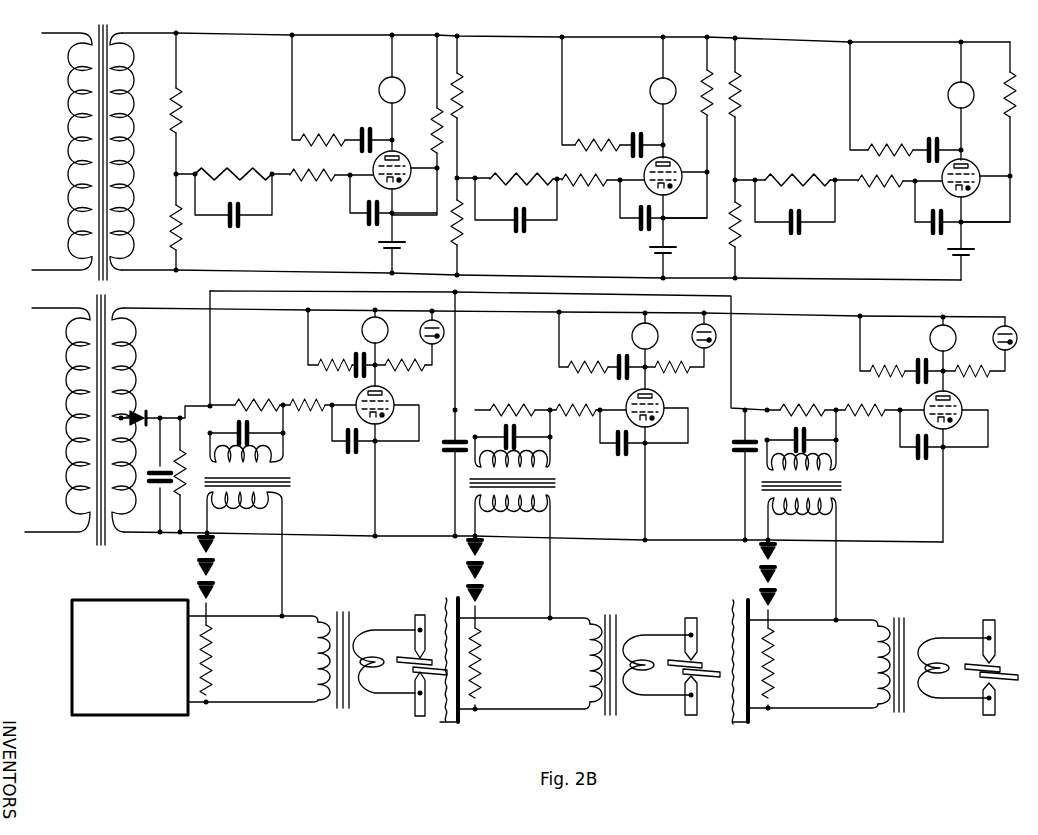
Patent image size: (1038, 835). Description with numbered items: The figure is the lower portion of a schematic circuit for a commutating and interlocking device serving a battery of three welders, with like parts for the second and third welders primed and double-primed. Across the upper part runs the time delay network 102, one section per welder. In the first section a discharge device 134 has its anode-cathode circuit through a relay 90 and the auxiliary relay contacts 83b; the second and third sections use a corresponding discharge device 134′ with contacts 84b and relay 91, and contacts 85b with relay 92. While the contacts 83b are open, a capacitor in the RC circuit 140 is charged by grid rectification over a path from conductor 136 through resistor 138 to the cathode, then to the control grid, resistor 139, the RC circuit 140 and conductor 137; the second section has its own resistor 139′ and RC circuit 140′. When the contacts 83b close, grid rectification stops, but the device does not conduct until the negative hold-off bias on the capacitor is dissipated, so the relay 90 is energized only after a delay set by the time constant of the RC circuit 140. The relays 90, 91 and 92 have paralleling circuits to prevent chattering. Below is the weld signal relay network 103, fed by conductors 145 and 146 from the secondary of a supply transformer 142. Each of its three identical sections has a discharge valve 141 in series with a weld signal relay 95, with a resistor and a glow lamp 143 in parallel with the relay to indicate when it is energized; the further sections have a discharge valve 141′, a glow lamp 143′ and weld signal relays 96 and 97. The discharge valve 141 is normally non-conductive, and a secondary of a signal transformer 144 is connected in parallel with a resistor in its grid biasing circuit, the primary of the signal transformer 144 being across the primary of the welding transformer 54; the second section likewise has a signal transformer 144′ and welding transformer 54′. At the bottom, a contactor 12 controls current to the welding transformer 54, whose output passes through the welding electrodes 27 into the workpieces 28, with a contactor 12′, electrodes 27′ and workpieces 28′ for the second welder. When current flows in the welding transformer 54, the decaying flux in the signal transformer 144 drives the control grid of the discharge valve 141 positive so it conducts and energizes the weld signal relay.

The contactor 12 is at (180, 716).
The contactor 12′ is at (448, 722).
The welding electrodes 27 is at (415, 626).
The welding electrodes 27′ is at (698, 607).
The workpieces 28 is at (435, 655).
The workpieces 28′ is at (705, 660).
The welding transformer 54 is at (345, 613).
The welding transformer 54′ is at (617, 617).
The auxiliary relay contacts 83b is at (400, 246).
The auxiliary relay contacts 84b is at (671, 250).
The auxiliary relay contacts 85b is at (968, 252).
The relay 90 is at (392, 90).
The relay 91 is at (663, 91).
The relay 92 is at (961, 95).
The weld signal relay 95 is at (375, 330).
The weld signal relay 96 is at (645, 336).
The weld signal relay 97 is at (943, 338).
The time delay network 102 is at (1017, 60).
The weld signal relay network 103 is at (957, 457).
The discharge device 134 is at (410, 154).
The discharge device 134′ is at (680, 159).
The conductor 136 is at (253, 38).
The conductor 137 is at (305, 263).
The resistor 138 is at (100, 157).
The resistor 139 is at (308, 178).
The resistor 139′ is at (600, 181).
The RC circuit 140 is at (240, 206).
The RC circuit 140′ is at (532, 210).
The discharge valve 141 is at (389, 390).
The discharge valve 141′ is at (660, 397).
The supply transformer 142 is at (95, 305).
The glow lamp 143 is at (421, 336).
The glow lamp 143′ is at (692, 336).
The signal transformer 144 is at (288, 480).
The signal transformer 144′ is at (555, 472).
The conductor 145 is at (172, 298).
The conductor 146 is at (140, 534).